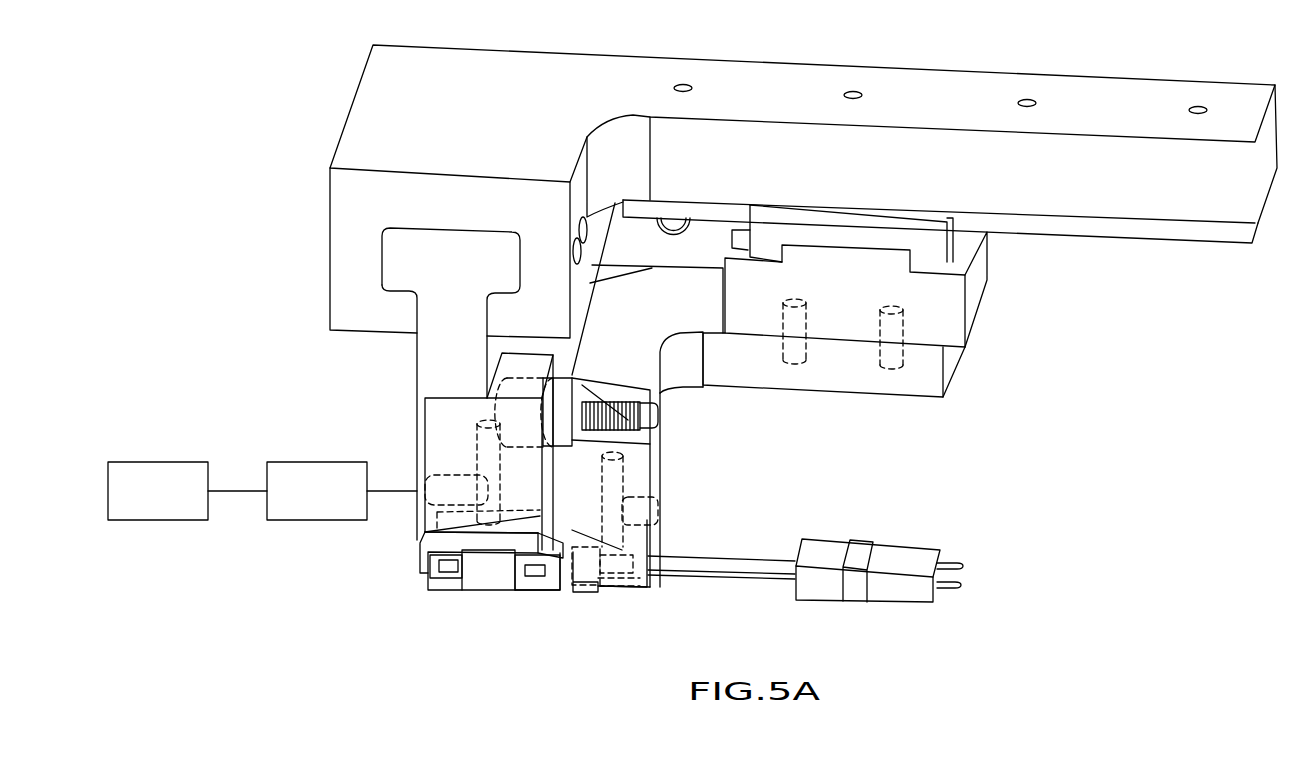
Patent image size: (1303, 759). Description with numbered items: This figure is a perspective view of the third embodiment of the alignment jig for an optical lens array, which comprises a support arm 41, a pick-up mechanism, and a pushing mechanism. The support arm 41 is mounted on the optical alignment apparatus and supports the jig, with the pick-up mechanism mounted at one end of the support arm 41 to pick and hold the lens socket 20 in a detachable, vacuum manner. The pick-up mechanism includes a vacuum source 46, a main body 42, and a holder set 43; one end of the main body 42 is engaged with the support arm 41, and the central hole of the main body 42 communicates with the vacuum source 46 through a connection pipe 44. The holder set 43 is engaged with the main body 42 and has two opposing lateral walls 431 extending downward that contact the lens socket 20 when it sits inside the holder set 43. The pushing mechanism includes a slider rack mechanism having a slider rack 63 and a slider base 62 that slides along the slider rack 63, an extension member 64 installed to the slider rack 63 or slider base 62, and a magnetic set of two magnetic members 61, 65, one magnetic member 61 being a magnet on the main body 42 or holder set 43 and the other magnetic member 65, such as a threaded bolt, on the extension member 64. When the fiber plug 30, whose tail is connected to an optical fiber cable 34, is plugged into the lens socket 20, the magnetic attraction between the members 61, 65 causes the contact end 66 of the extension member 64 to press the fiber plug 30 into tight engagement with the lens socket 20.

The lens socket 20 is at (437, 580).
The fiber plug 30 is at (592, 594).
The optical fiber cable 34 is at (733, 561).
The support arm 41 is at (340, 232).
The main body 42 is at (430, 420).
The holder set 43 is at (423, 546).
The connection pipe 44 is at (285, 468).
The vacuum source 46 is at (147, 472).
The magnetic member 61 is at (567, 440).
The slider base 62 is at (948, 307).
The slider rack 63 is at (1067, 232).
The extension member 64 is at (917, 378).
The magnetic member 65 is at (657, 413).
The contact end 66 is at (568, 584).
The lateral walls 431 is at (487, 582).